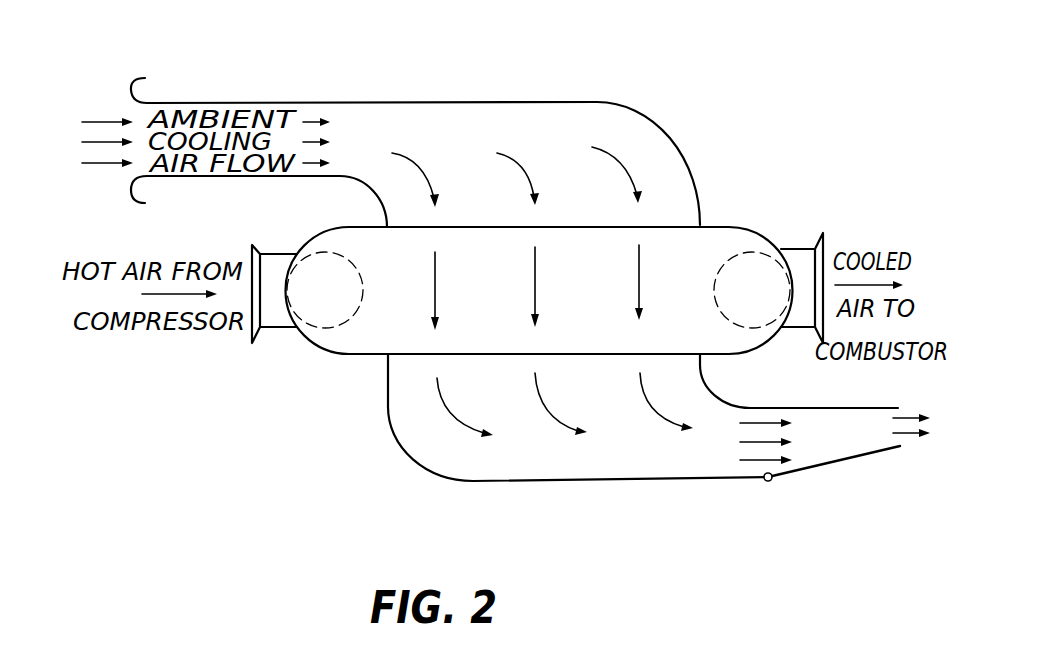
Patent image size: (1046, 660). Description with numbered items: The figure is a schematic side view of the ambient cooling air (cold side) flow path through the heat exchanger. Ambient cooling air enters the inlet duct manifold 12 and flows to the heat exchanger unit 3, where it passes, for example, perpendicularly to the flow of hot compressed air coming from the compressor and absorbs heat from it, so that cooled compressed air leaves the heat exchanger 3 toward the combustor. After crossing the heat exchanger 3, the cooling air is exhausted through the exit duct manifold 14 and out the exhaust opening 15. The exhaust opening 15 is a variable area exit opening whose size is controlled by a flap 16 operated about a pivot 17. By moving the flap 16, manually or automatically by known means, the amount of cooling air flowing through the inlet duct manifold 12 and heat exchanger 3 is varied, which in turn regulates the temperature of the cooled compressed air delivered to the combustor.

The heat exchanger unit 3 is at (740, 226).
The inlet duct manifold 12 is at (446, 102).
The exit duct manifold 14 is at (503, 481).
The exhaust opening 15 is at (765, 408).
The flap 16 is at (828, 466).
The pivot 17 is at (763, 492).